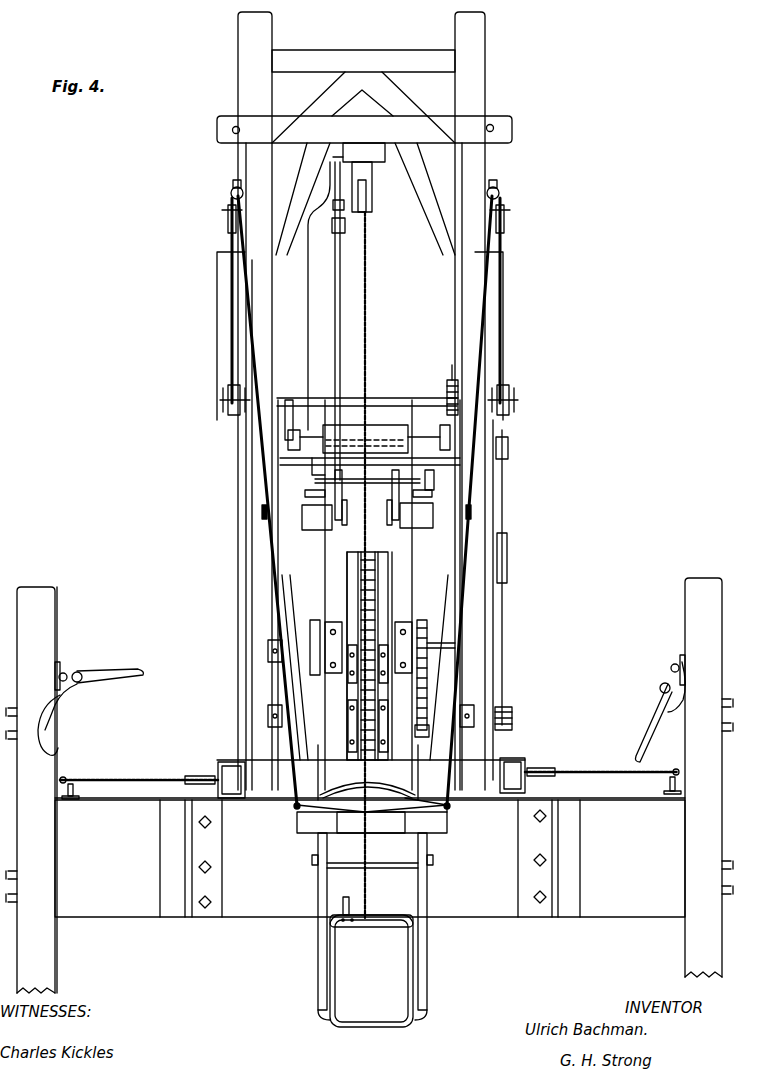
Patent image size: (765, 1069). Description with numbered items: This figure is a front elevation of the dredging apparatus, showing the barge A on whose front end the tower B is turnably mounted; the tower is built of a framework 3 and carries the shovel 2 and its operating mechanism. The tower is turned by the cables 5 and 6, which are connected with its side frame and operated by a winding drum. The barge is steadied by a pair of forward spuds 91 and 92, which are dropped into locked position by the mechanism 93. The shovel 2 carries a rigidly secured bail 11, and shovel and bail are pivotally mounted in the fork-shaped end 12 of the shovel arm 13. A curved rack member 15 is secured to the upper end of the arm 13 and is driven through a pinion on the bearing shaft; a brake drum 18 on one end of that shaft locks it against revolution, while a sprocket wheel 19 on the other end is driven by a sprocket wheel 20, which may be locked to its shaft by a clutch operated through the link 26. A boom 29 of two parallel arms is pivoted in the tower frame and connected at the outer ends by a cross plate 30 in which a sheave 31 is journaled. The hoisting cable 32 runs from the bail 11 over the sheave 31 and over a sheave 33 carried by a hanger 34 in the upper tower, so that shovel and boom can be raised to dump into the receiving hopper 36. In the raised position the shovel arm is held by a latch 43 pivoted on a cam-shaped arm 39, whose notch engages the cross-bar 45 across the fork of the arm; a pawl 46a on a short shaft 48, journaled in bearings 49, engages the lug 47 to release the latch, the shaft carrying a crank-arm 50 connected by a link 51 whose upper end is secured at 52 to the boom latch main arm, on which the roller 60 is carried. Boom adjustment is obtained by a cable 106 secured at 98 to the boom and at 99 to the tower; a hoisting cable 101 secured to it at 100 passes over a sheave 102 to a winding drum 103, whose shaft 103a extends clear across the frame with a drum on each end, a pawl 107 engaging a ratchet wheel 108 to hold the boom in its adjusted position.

The tower B is at (363, 51).
The framework 3 is at (365, 401).
The securing point of link to main arm 52 is at (348, 155).
The hanger 34 is at (372, 190).
The sheave 33 is at (366, 208).
The cable 32 is at (365, 890).
The link 51 is at (310, 296).
The roller 60 is at (342, 321).
The securing point of cable to tower 99 is at (365, 191).
The sheave 102 is at (369, 226).
The hoisting cable 101 is at (371, 309).
The attachment point of hoisting cable 100 is at (361, 500).
The winding drum 103 is at (372, 396).
The winding drum shaft 103a is at (388, 396).
The ratchet wheel 108 is at (437, 392).
The pawl 107 is at (452, 365).
The receiving hopper 36 is at (365, 430).
The crank-arm 50 is at (327, 466).
The short shaft section 48 is at (367, 470).
The pawl 46a is at (365, 486).
The bearings 49 is at (435, 481).
The lug 47 is at (367, 495).
The latch member 43 is at (367, 514).
The cam-shaped arm 39 is at (320, 530).
The curved rack member 15 is at (375, 605).
The brake drum 18 is at (315, 620).
The sprocket wheel 19 is at (423, 656).
The sprocket wheel 20 is at (429, 739).
The cable 106 is at (282, 633).
The link 26 is at (508, 660).
The barge A is at (370, 858).
The forward spud 91 is at (58, 728).
The forward spud 92 is at (690, 952).
The spud locking mechanism 93 is at (100, 667).
The cable 5 is at (130, 782).
The cable 6 is at (603, 776).
The boom 29 is at (270, 772).
The shovel arm 13 is at (368, 772).
The sheave 31 is at (360, 810).
The cross piece or plate 30 is at (426, 804).
The securing point of cable to boom 98 is at (295, 807).
The fork-shaped end 12 is at (318, 935).
The cross-bar 45 is at (372, 876).
The bail 11 is at (398, 928).
The shovel 2 is at (371, 971).